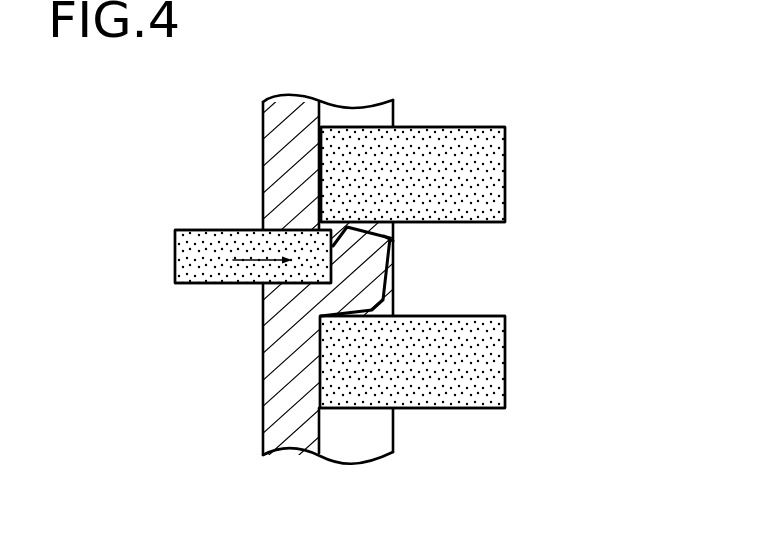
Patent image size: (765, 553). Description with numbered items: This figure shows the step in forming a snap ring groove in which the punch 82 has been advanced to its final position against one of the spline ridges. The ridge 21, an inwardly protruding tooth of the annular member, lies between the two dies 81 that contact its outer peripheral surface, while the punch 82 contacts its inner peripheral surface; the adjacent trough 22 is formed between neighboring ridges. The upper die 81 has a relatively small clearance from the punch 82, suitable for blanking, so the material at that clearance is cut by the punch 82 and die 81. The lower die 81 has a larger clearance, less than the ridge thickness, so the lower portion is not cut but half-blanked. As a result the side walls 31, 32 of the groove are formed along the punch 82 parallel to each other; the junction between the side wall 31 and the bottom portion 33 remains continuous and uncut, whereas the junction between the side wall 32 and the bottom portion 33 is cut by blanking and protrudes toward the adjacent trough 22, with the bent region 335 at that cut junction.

The ridge 21 is at (288, 134).
The trough 22 is at (395, 433).
The side wall 31 is at (280, 277).
The side wall 32 is at (283, 236).
The bottom portion 33 is at (307, 270).
The bent portion of spring clip 335 is at (394, 227).
The die 81 is at (494, 172).
The punch 82 is at (192, 258).